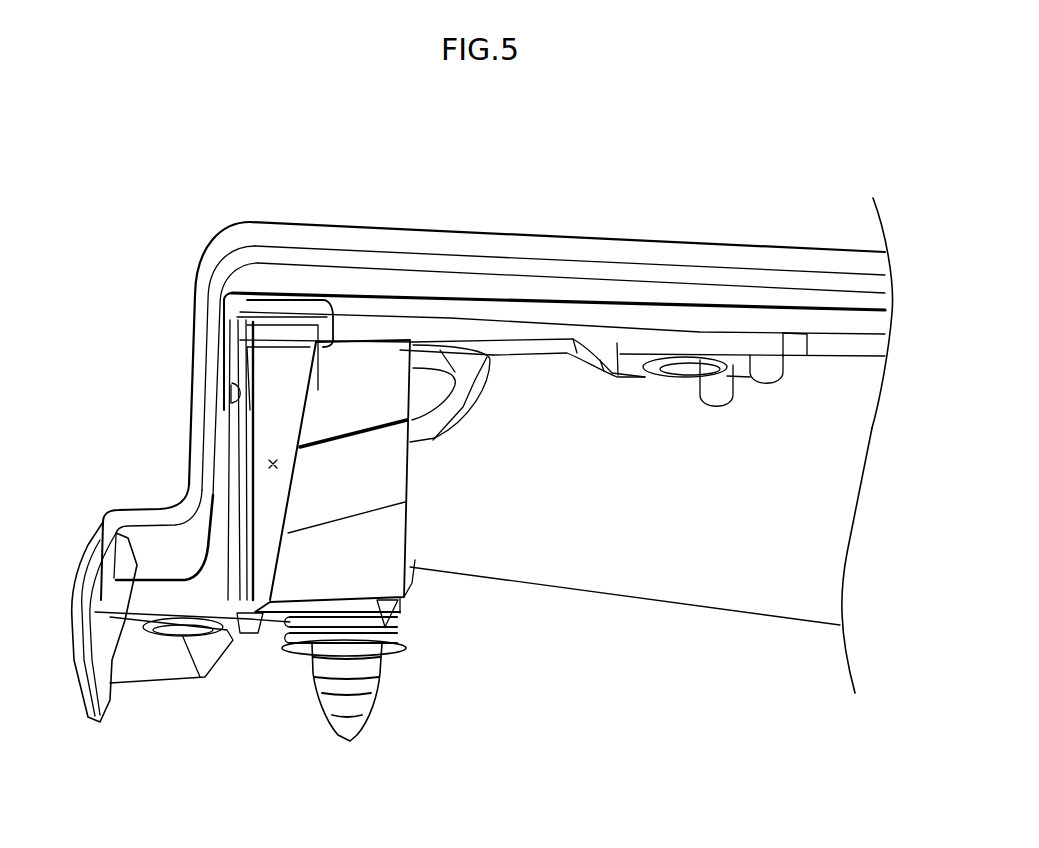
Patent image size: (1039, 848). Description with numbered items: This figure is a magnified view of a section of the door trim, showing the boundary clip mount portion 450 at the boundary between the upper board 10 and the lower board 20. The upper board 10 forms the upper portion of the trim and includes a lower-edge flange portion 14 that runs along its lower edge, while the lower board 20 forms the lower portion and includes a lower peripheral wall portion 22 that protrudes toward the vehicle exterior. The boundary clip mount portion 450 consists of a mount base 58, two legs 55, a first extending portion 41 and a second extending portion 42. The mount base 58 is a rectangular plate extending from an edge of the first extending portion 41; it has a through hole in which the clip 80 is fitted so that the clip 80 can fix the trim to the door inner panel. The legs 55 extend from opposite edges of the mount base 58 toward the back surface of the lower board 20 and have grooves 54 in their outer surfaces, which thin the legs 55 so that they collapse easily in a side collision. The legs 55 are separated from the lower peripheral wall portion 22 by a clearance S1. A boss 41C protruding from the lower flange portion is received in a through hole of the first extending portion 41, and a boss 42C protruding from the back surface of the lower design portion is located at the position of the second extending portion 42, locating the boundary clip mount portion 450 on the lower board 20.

The upper board 10 is at (905, 327).
The lower-edge flange portion 14 is at (825, 370).
The lower board 20 is at (868, 507).
The lower peripheral wall portion 22 is at (230, 407).
The first extending portion 41 is at (130, 620).
The boss 41C is at (184, 632).
The second extending portion 42 is at (783, 367).
The boss 42C is at (733, 385).
The boundary clip mount portion 450 is at (415, 590).
The groove 54 is at (322, 440).
The leg 55 is at (280, 363).
The mount base 58 is at (277, 630).
The clip 80 is at (355, 700).
The clearance S1 is at (272, 464).